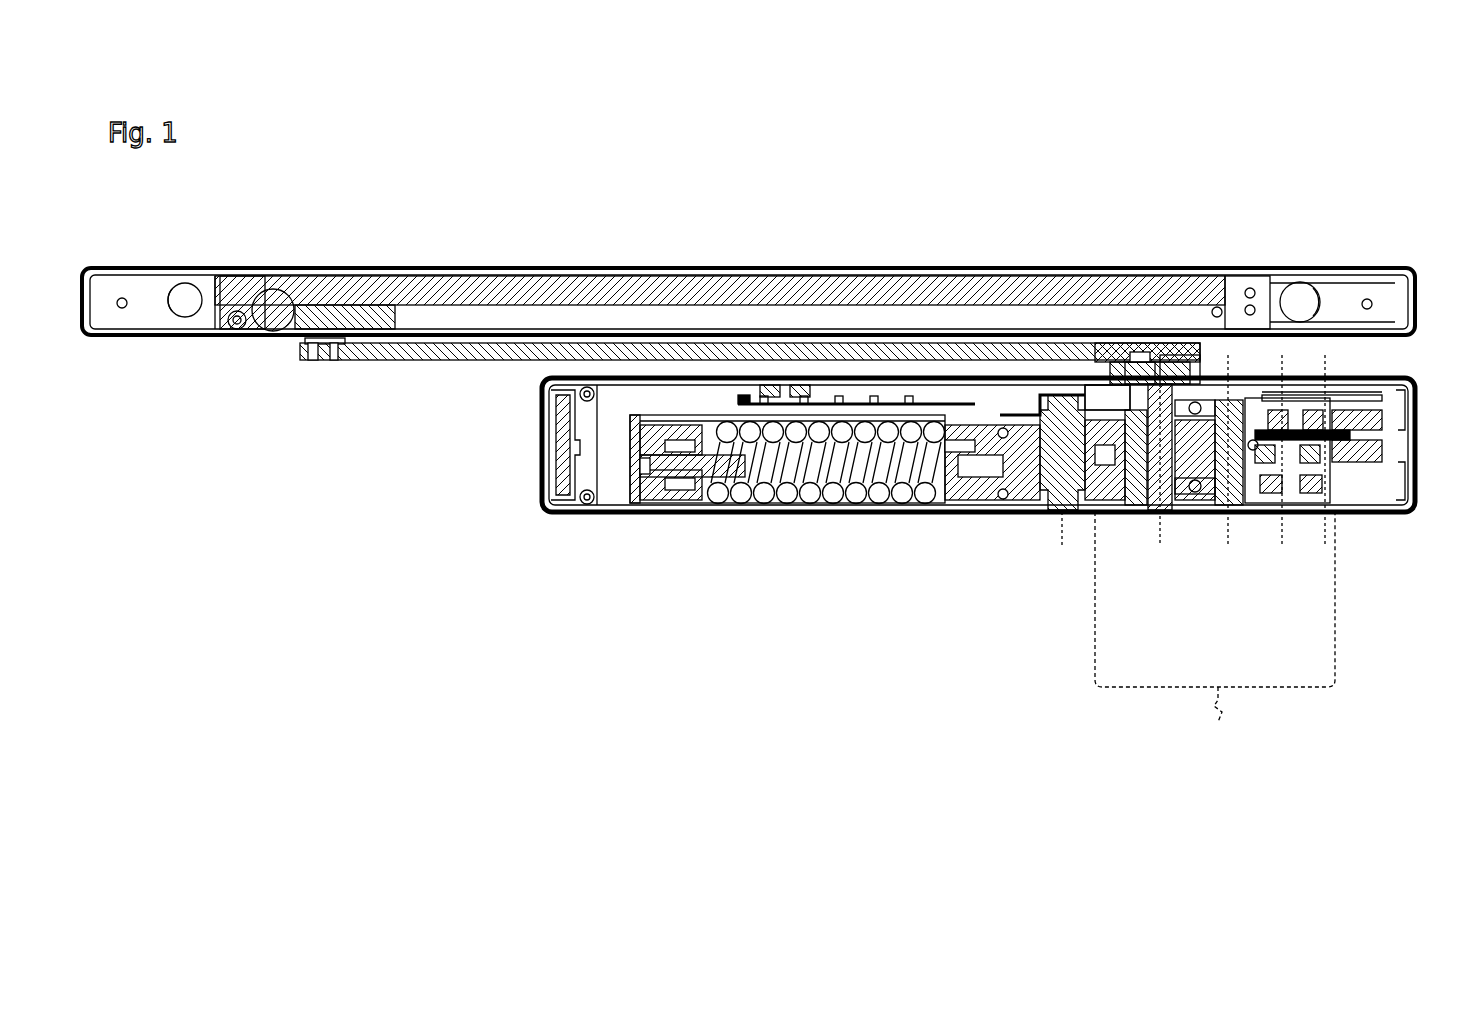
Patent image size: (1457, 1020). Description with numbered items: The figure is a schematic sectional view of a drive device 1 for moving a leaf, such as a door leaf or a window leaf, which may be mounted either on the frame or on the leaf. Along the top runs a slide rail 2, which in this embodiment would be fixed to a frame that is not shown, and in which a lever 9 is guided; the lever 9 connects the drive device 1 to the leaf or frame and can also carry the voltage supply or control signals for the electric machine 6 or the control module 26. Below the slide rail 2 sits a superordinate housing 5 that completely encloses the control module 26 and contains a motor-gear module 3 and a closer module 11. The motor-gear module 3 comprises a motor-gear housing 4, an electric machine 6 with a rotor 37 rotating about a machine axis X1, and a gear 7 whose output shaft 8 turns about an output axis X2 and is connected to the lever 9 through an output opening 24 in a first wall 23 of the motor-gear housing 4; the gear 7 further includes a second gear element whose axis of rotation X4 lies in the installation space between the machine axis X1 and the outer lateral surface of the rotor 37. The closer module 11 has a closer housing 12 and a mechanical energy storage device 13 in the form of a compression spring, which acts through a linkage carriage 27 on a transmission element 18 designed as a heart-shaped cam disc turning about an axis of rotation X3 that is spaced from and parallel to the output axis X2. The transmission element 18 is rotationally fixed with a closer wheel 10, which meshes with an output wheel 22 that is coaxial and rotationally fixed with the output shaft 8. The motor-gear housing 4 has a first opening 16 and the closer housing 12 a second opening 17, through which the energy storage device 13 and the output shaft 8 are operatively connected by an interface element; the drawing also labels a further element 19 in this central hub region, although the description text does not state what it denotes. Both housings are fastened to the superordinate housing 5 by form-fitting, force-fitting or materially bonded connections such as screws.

The drive device 1 is at (478, 578).
The slide rail 2 is at (626, 306).
The motor-gear module 3 is at (1256, 414).
The motor-gear housing 4 is at (1369, 465).
The superordinate housing 5 is at (582, 516).
The electric machine 6 is at (1338, 370).
The gear 7 is at (1215, 628).
The output shaft 8 is at (1168, 510).
The lever 9 is at (410, 362).
The closer wheel 10 is at (1102, 510).
The closer module 11 is at (656, 510).
The closer housing 12 is at (1022, 396).
The mechanical energy storage device 13 is at (795, 506).
The first opening 16 is at (1108, 404).
The second opening 17 is at (1107, 397).
The transmission element 18 is at (1120, 510).
The hub 19 is at (1047, 513).
The output wheel 22 is at (1180, 378).
The first wall 23 is at (1116, 386).
The output opening 24 is at (1140, 378).
The control module 26 is at (768, 398).
The linkage carriage 27 is at (977, 489).
The rotor 37 is at (1368, 385).
The machine axis X1 is at (1330, 469).
The output axis X2 is at (1165, 541).
The axis of rotation of the transmission element X3 is at (1066, 542).
The axis of rotation of the second gear element X4 is at (1283, 466).